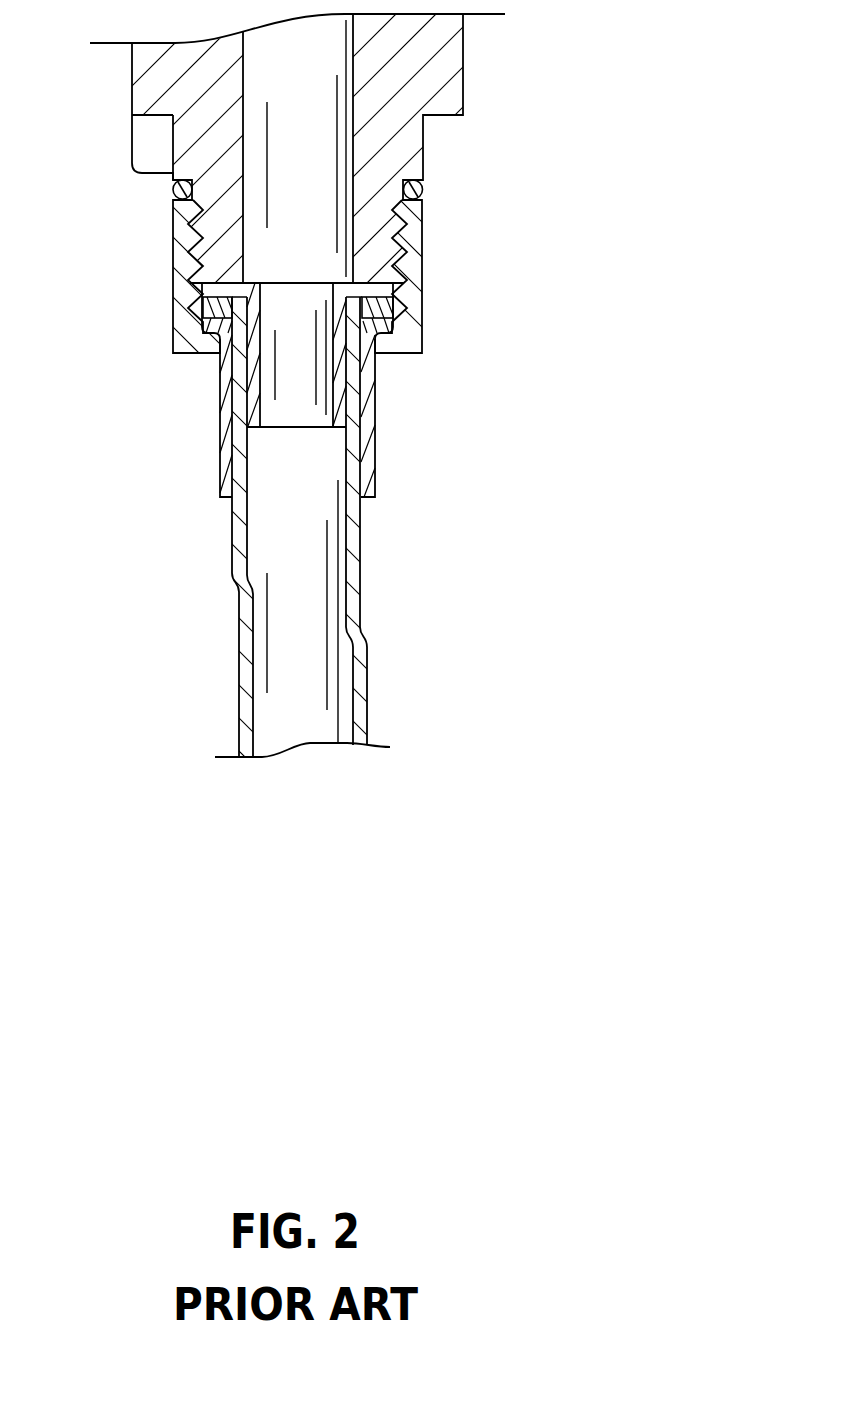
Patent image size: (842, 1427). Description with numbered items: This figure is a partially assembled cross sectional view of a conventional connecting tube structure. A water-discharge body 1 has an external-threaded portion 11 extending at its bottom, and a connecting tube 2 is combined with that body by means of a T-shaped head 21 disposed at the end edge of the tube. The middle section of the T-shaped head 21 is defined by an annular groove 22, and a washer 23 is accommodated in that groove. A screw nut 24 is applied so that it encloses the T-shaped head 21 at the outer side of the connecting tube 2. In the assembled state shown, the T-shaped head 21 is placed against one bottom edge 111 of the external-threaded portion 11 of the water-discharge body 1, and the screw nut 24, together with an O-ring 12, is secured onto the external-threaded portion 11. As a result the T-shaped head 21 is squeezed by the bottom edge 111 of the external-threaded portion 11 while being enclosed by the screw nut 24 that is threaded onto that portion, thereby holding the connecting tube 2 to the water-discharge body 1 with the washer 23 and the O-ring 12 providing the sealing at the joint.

The water-discharge body 1 is at (478, 65).
The external-threaded portion 11 is at (207, 222).
The bottom edge 111 is at (205, 306).
The O-ring 12 is at (424, 188).
The connecting tube 2 is at (376, 575).
The T-shaped head 21 is at (220, 415).
The annular groove 22 is at (221, 326).
The washer 23 is at (388, 310).
The screw nut 24 is at (173, 268).